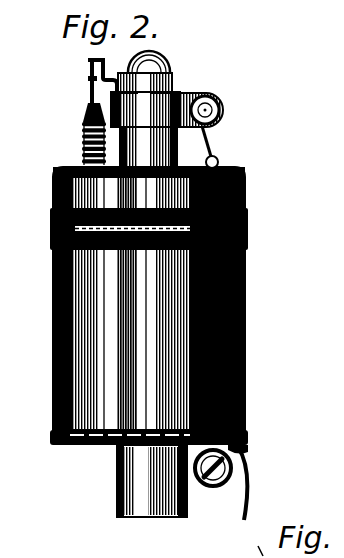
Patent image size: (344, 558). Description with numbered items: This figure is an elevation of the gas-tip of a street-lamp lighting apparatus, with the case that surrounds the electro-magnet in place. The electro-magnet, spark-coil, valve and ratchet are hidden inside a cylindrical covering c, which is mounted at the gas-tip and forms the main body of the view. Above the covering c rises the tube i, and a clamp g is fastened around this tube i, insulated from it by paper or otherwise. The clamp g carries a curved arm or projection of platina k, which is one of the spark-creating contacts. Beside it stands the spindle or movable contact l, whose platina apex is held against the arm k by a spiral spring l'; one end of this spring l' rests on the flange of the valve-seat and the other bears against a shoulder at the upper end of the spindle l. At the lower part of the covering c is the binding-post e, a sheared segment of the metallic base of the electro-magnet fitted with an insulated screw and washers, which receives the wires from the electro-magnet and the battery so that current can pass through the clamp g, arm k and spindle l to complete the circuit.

The covering c is at (149, 342).
The tube i is at (145, 109).
The clamp g is at (190, 102).
The curved arm or projection of platina k is at (90, 58).
The spindle or movable contact l is at (69, 83).
The spiral spring l' is at (73, 134).
The binding-post e is at (244, 457).